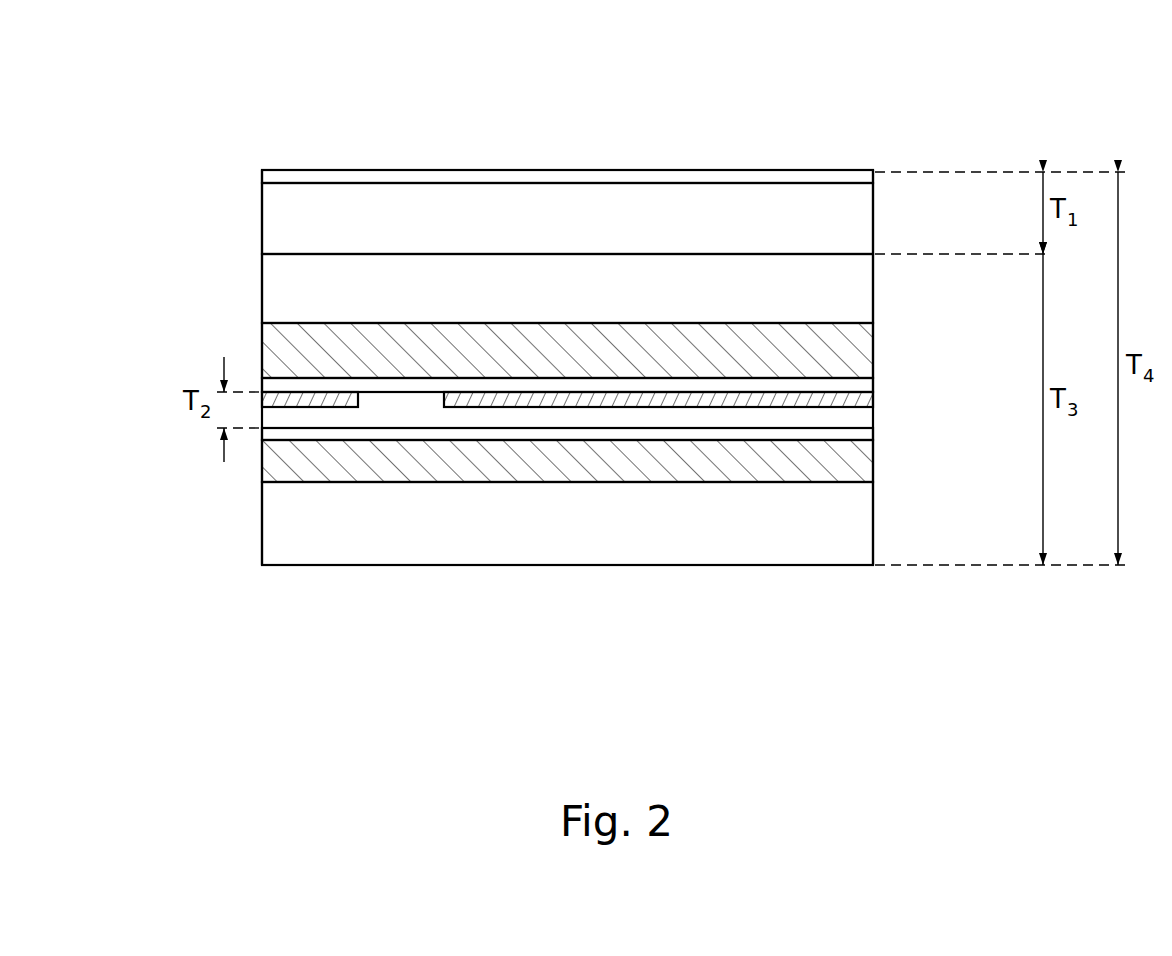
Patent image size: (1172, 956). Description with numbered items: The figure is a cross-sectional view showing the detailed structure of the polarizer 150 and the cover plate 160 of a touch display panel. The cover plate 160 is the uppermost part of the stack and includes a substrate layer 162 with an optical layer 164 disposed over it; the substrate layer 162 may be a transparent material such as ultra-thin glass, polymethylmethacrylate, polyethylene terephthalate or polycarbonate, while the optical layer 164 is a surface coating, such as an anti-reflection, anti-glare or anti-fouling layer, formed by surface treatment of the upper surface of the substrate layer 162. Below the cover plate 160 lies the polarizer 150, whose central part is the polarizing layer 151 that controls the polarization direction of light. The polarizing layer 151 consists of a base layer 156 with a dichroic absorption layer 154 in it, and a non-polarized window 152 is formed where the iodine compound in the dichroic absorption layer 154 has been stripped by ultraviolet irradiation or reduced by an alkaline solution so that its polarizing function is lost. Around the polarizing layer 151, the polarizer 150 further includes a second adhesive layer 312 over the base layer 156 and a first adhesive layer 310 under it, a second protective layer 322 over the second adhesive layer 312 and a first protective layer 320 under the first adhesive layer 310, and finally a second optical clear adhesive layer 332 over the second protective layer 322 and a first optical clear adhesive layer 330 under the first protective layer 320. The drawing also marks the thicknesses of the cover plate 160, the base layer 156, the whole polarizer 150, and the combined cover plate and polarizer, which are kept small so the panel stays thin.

The polarizer 150 is at (158, 565).
The polarizing layer 151 is at (655, 80).
The non-polarized window 152 is at (400, 398).
The dichroic absorption layer 154 is at (500, 393).
The base layer 156 is at (568, 415).
The cover plate 160 is at (373, 80).
The substrate layer 162 is at (386, 203).
The optical layer 164 is at (297, 177).
The first adhesive layer 310 is at (867, 438).
The second adhesive layer 312 is at (867, 386).
The first protective layer 320 is at (867, 468).
The second protective layer 322 is at (867, 360).
The first optical clear adhesive layer 330 is at (867, 528).
The second optical clear adhesive layer 332 is at (867, 290).